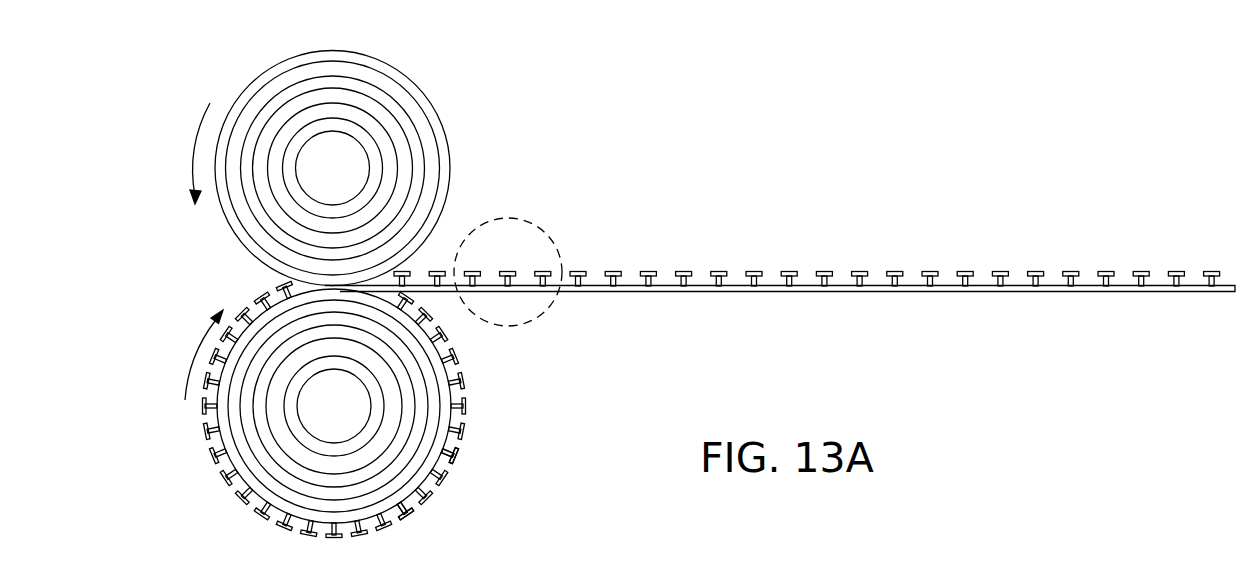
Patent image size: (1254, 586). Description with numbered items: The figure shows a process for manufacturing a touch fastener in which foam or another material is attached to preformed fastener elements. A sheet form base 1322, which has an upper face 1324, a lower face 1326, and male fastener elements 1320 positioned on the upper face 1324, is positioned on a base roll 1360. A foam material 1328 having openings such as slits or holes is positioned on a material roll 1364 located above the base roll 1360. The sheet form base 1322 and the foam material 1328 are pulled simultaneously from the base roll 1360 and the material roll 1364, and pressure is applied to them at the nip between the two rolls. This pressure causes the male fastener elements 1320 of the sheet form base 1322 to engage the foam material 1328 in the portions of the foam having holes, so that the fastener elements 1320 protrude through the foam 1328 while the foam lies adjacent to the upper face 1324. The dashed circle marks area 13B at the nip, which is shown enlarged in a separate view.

The male fastener elements 1320 is at (468, 406).
The sheet form base 1322 is at (438, 460).
The upper face 1324 is at (406, 516).
The lower face 1326 is at (685, 292).
The foam material 1328 is at (420, 102).
The base roll 1360 is at (362, 415).
The material roll 1364 is at (360, 178).
The area 13B is at (511, 264).